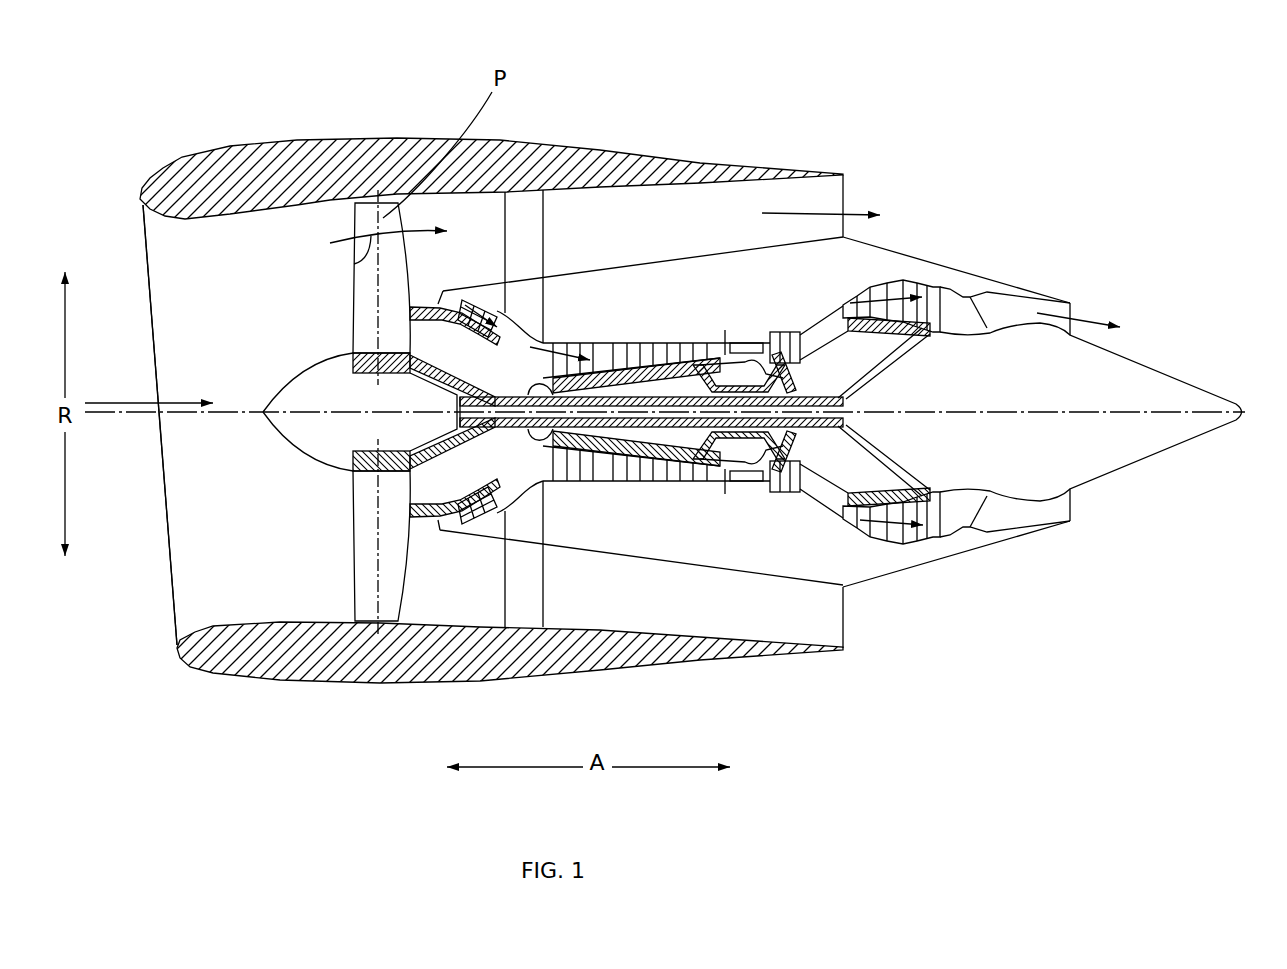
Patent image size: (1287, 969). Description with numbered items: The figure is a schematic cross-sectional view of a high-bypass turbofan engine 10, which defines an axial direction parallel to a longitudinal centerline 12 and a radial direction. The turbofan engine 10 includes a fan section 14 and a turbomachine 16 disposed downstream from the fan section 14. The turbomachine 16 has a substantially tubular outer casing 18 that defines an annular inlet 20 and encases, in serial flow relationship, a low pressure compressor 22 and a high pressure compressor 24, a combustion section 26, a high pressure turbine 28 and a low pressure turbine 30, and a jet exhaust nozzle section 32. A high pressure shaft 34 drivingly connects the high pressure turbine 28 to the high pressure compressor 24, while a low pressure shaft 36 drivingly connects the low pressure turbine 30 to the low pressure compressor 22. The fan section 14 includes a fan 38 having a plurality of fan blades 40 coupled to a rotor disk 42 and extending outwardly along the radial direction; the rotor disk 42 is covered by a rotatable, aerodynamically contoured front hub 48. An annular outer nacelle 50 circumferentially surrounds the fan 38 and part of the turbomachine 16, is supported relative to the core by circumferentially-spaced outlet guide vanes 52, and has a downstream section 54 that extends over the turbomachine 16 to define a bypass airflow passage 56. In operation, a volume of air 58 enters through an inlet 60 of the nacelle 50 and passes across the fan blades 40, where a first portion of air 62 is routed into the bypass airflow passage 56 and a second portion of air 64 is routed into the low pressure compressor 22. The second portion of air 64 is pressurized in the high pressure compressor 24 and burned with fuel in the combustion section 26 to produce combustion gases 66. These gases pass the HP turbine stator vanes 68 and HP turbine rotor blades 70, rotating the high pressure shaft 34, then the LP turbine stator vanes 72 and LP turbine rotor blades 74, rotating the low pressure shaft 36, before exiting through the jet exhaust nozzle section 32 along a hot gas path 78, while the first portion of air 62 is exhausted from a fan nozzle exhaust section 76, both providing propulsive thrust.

The turbofan engine 10 is at (990, 148).
The longitudinal centerline 12 is at (1010, 410).
The fan section 14 is at (309, 228).
The turbomachine 16 is at (663, 298).
The outer casing 18 is at (700, 577).
The annular inlet 20 is at (444, 518).
The low pressure compressor 22 is at (505, 491).
The high pressure compressor 24 is at (583, 471).
The combustion section 26 is at (742, 478).
The high pressure turbine 28 is at (810, 483).
The low pressure turbine 30 is at (928, 545).
The jet exhaust nozzle section 32 is at (1004, 514).
The high pressure shaft 34 is at (750, 375).
The low pressure shaft 36 is at (857, 397).
The fan 38 is at (325, 308).
The fan blades 40 is at (352, 562).
The rotor disk 42 is at (360, 358).
The front hub 48 is at (277, 428).
The outer nacelle 50 is at (398, 685).
The outlet guide vanes 52 is at (545, 222).
The downstream section 54 is at (790, 150).
The bypass airflow passage 56 is at (693, 227).
The volume of air 58 is at (146, 403).
The inlet 60 is at (173, 624).
The first portion of air 62 is at (357, 264).
The second portion of air 64 is at (440, 298).
The combustion gases 66 is at (890, 287).
The HP turbine stator vanes 68 is at (758, 478).
The HP turbine rotor blades 70 is at (787, 476).
The LP turbine stator vanes 72 is at (850, 527).
The LP turbine rotor blades 74 is at (865, 527).
The fan nozzle exhaust section 76 is at (835, 207).
The hot gas path 78 is at (826, 316).